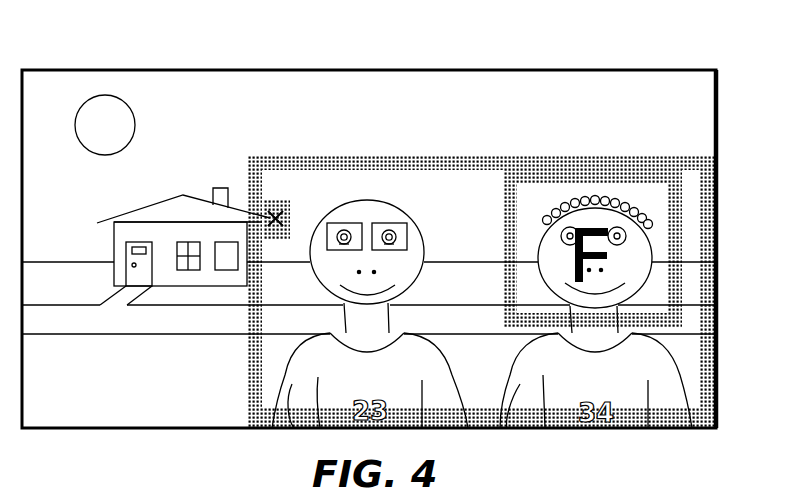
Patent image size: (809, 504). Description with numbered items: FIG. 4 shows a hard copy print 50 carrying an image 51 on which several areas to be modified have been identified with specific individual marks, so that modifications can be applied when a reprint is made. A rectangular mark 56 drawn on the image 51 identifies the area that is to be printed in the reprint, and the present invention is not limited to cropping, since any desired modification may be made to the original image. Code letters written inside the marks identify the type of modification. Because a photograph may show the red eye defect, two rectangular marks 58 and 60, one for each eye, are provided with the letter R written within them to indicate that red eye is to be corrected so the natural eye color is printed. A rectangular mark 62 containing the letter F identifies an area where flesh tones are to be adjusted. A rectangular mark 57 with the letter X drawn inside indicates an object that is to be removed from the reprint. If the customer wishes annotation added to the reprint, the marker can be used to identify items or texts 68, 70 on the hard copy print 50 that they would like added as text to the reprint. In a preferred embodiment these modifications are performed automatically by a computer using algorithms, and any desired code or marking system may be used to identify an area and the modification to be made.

The hard copy print 50 is at (598, 70).
The image 51 is at (470, 182).
The rectangular mark 56 is at (650, 158).
The rectangular mark with letter X 57 is at (275, 218).
The rectangular mark with letter R 58 is at (345, 225).
The rectangular mark with letter R 60 is at (390, 225).
The rectangular mark with letter F 62 is at (677, 222).
The text 68 is at (108, 408).
The text 70 is at (296, 428).